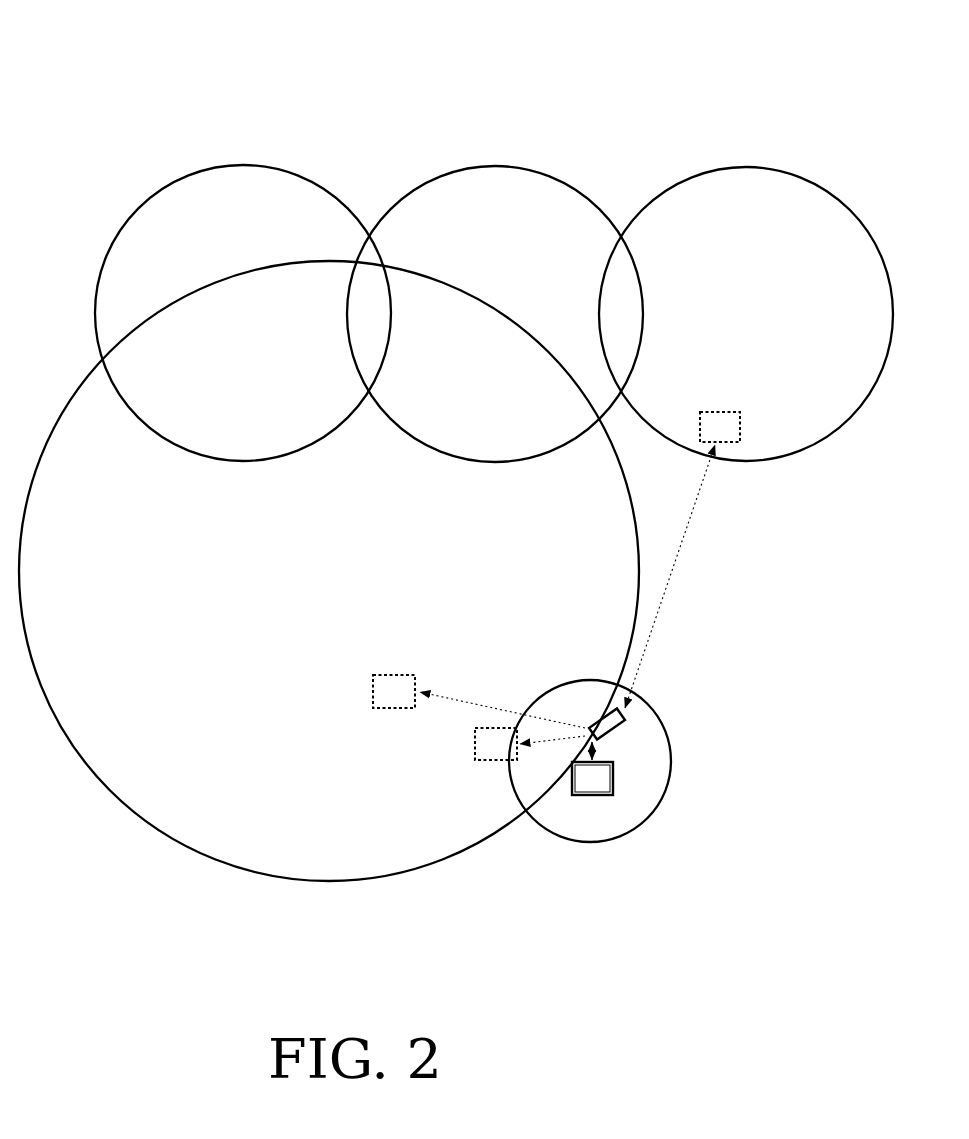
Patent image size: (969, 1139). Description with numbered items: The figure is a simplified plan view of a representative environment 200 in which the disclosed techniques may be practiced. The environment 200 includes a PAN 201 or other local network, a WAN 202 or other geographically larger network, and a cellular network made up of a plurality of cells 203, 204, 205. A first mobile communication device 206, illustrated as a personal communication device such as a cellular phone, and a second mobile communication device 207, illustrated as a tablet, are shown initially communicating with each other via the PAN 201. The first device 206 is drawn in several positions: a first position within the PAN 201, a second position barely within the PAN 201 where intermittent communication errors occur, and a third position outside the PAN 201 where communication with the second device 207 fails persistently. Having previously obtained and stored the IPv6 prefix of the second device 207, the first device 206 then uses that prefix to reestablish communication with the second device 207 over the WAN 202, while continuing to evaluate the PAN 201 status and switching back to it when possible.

The example environment 200 is at (537, 42).
The PAN 201 is at (590, 761).
The WAN 202 is at (329, 571).
The cell 203 is at (243, 313).
The cell 204 is at (495, 314).
The cell 205 is at (746, 314).
The first mobile communication device 206 is at (556, 603).
The second mobile communication device 207 is at (604, 718).